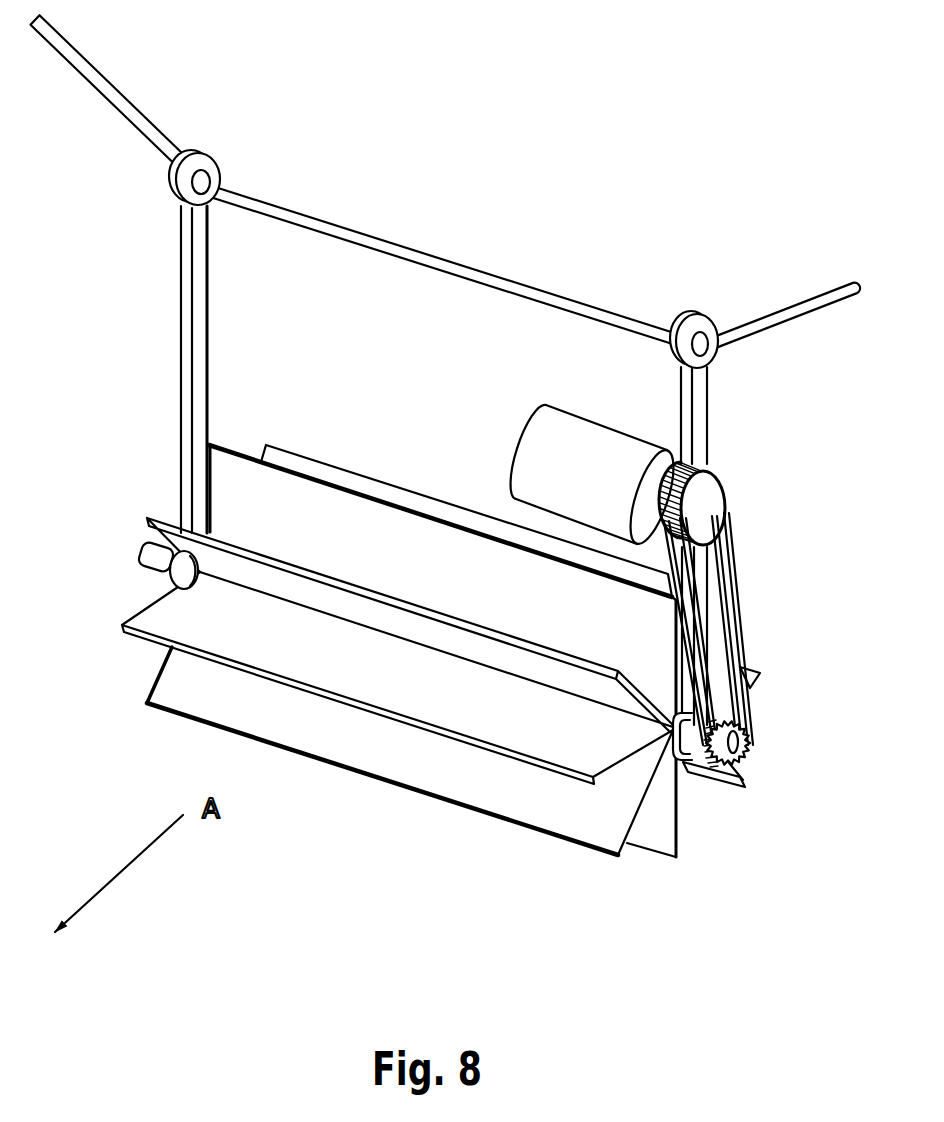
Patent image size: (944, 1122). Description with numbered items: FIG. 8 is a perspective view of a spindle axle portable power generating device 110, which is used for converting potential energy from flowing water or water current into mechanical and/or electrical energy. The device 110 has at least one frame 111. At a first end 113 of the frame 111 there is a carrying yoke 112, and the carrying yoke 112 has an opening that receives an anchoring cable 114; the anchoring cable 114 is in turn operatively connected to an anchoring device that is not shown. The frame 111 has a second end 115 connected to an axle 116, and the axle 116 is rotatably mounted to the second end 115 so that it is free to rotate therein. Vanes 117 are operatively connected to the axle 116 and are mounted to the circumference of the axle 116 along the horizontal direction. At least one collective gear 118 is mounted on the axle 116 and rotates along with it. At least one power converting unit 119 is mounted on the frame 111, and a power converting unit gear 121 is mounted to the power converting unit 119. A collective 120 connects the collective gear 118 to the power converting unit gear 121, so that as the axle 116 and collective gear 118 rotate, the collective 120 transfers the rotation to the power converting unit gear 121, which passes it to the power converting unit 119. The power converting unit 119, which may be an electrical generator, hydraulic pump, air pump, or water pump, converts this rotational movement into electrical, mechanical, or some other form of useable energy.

The spindle axle portable power generating device 110 is at (462, 183).
The frame 111 is at (712, 428).
The carrying yoke 112 is at (697, 316).
The first end 113 is at (742, 302).
The anchoring cable 114 is at (476, 267).
The second end 115 is at (692, 797).
The axle 116 is at (752, 729).
The vanes 117 is at (469, 737).
The collective gear 118 is at (730, 782).
The power converting unit 119 is at (573, 420).
The collective 120 is at (737, 587).
The power converting unit gear 121 is at (728, 491).